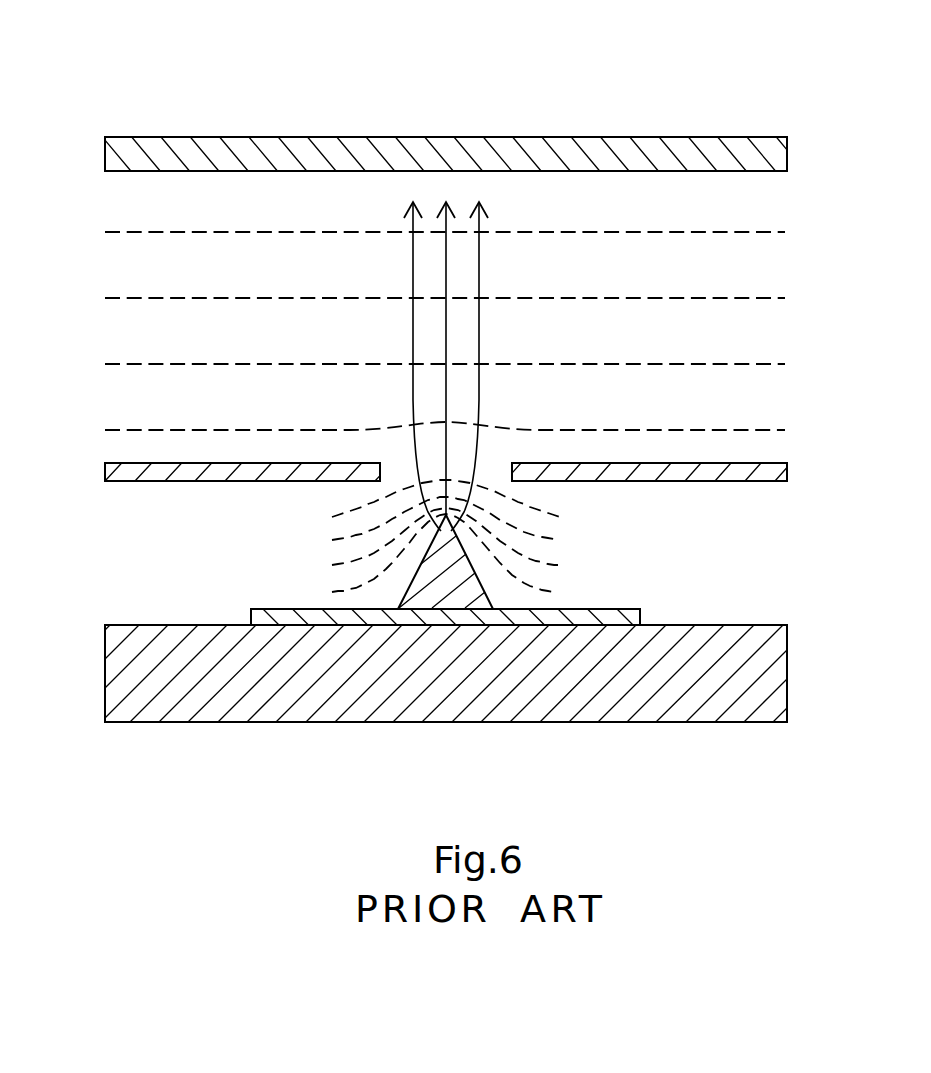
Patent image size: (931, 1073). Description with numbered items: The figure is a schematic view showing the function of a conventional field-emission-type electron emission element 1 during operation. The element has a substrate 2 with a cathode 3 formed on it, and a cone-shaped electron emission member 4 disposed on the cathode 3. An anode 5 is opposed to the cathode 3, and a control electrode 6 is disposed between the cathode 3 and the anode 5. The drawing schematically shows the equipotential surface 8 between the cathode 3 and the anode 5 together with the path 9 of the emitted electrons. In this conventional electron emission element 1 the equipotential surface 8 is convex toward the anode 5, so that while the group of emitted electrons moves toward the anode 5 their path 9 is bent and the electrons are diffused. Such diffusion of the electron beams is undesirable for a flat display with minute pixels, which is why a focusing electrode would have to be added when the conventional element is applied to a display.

The electron emission element 1 is at (87, 88).
The substrate 2 is at (787, 692).
The cathode 3 is at (528, 620).
The cone-shaped electron emission member 4 is at (440, 605).
The anode 5 is at (787, 148).
The control electrode 6 is at (105, 468).
The equipotential surface 8 is at (103, 228).
The path of emitted electrons 9 is at (397, 205).